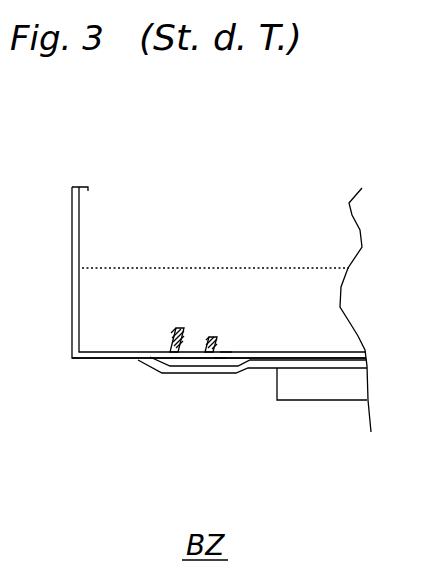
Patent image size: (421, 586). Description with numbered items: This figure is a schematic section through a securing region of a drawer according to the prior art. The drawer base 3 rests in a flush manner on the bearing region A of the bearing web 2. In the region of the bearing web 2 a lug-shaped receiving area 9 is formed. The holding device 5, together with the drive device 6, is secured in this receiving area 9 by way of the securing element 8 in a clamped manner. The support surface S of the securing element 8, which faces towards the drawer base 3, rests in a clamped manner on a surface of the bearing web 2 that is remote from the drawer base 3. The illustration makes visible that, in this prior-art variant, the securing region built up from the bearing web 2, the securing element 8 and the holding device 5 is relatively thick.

The bearing web 2 is at (112, 362).
The drawer base 3 is at (108, 287).
The holding device 5 is at (263, 364).
The drive device 6 is at (303, 384).
The securing element 8 is at (226, 352).
The receiving area 9 is at (220, 358).
The bearing region A is at (181, 328).
The support surface S is at (213, 338).